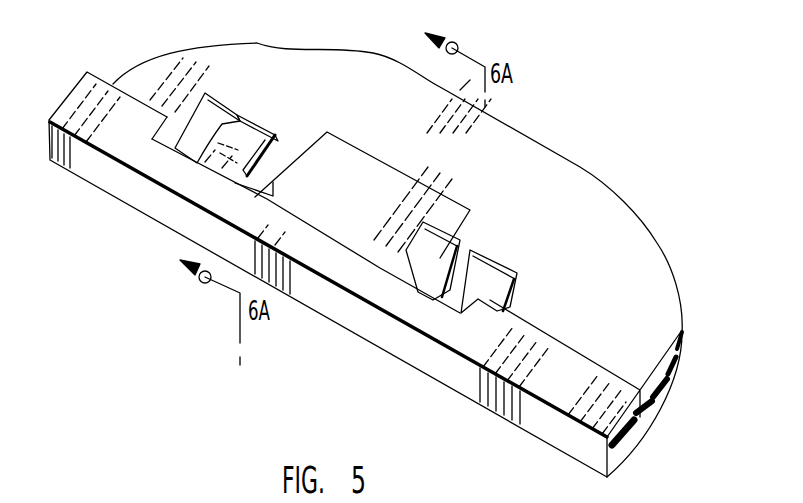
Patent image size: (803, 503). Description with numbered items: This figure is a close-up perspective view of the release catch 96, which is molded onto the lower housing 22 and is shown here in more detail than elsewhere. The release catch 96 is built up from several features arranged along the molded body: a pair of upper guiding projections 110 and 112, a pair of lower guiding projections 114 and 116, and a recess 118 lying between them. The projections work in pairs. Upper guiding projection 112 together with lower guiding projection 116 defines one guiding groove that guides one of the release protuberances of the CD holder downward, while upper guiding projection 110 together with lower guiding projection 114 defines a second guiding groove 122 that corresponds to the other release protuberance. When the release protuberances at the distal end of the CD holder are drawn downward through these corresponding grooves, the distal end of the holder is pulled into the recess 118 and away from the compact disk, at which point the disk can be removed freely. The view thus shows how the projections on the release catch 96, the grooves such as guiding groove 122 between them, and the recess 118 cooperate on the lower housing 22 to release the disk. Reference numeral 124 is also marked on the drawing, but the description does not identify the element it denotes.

The lower housing 22 is at (540, 133).
The release catch 96 is at (363, 352).
The upper guiding projection 110 is at (432, 240).
The upper guiding projection 112 is at (253, 133).
The lower guiding projection 114 is at (497, 262).
The lower guiding projection 116 is at (204, 97).
The recess 118 is at (352, 157).
The guiding groove 122 is at (517, 257).
The slot 124 is at (278, 108).